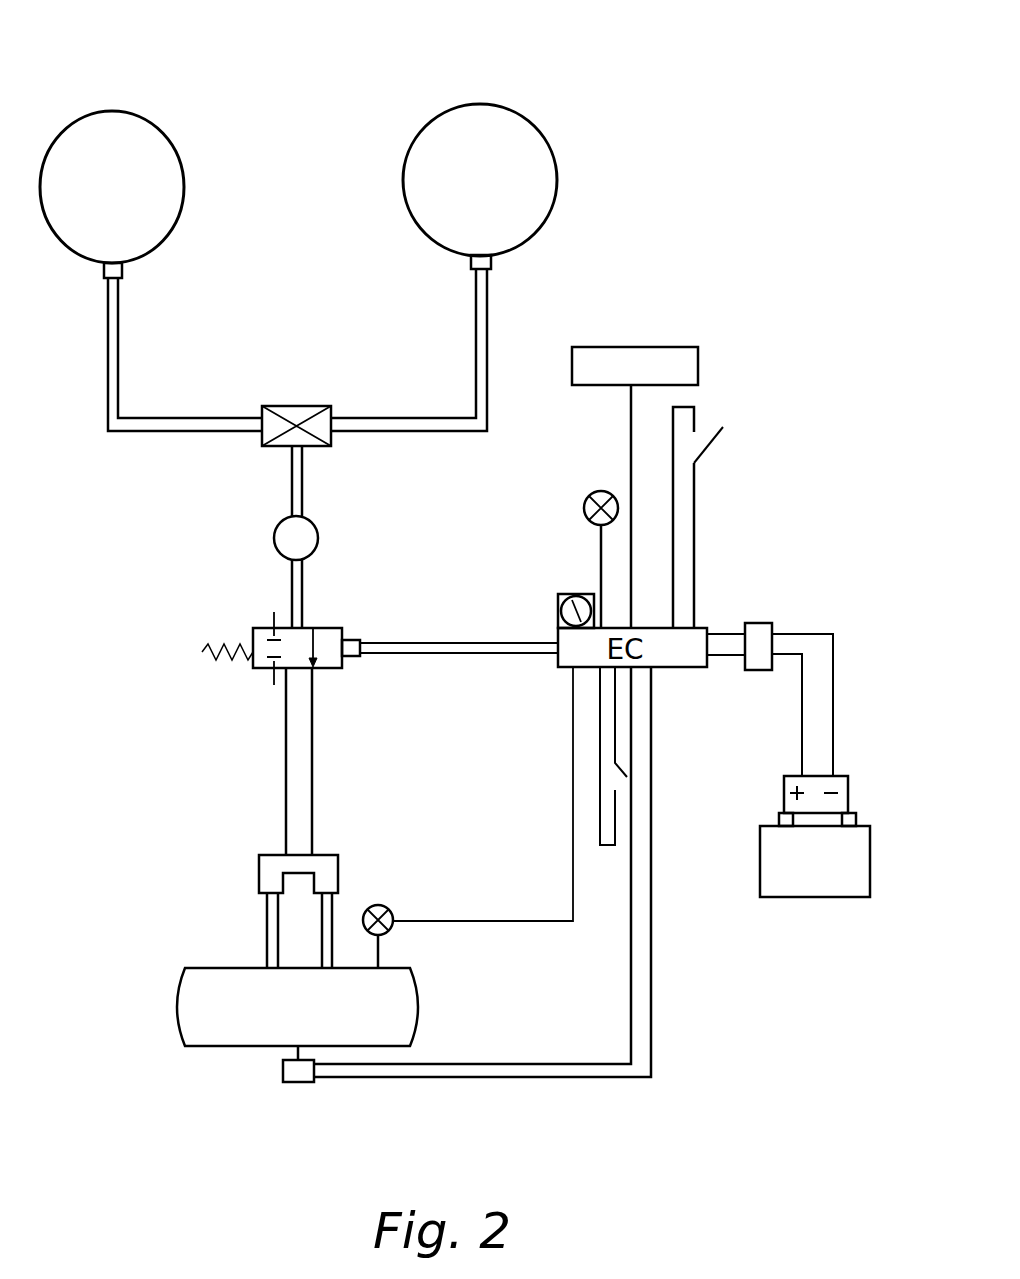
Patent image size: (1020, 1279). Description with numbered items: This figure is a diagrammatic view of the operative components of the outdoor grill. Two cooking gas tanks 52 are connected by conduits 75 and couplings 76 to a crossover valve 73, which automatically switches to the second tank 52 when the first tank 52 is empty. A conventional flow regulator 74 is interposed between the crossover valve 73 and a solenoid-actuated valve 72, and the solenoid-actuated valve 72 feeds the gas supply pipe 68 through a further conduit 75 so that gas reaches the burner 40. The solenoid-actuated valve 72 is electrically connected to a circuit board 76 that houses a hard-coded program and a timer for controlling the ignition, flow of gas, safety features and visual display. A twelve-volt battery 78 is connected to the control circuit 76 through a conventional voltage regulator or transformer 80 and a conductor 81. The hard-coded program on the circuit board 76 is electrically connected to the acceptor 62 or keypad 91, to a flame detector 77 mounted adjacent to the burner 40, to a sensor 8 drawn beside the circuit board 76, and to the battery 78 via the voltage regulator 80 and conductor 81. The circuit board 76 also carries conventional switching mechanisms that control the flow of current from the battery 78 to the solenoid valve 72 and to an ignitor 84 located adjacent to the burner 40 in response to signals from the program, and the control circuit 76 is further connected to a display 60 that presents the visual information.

The cooking gas tank 52 is at (142, 117).
The coupling / circuit board 76 is at (123, 270).
The conduit 75 is at (120, 372).
The crossover valve 73 is at (277, 405).
The flow regulator 74 is at (318, 530).
The solenoid-actuated valve 72 is at (340, 628).
The gas supply pipe 68 is at (335, 858).
The burner 40 is at (185, 1045).
The flame detector 77 is at (392, 908).
The ignitor 84 is at (297, 1083).
The display 60 is at (700, 372).
The acceptor 62 is at (712, 447).
The 12-volt battery 78 is at (593, 493).
The sensor 8 is at (575, 598).
The voltage regulator 80 is at (760, 622).
The conductor 81 is at (833, 696).
The keypad 91 is at (600, 848).